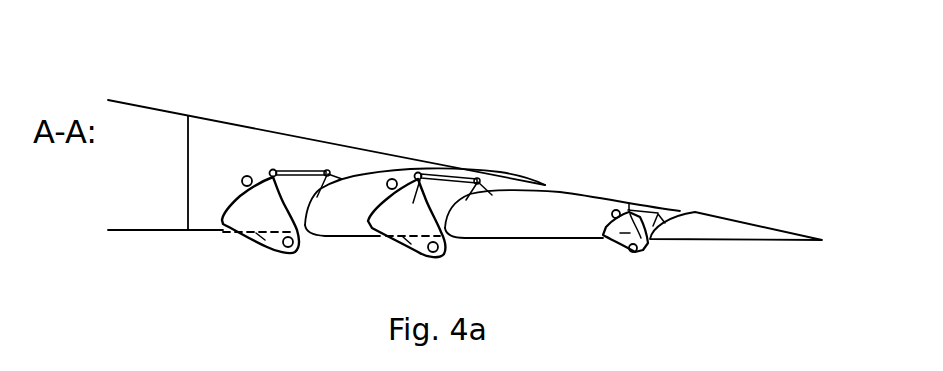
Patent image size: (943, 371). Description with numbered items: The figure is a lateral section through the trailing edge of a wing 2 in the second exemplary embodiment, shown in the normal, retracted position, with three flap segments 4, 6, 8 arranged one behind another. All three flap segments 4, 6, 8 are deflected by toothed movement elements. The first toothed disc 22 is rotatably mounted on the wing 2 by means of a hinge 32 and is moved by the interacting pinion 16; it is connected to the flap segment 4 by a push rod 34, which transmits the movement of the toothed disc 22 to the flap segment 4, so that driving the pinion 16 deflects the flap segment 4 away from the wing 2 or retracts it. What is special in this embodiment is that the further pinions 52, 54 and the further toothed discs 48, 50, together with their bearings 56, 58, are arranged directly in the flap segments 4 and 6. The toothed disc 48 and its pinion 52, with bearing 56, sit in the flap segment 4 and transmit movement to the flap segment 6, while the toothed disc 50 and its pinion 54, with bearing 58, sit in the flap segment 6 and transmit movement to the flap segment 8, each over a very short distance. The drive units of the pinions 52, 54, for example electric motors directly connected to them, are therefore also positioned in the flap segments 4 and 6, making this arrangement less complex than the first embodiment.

The wing 2 is at (168, 178).
The flap segment 4 is at (350, 187).
The flap segment 6 is at (533, 210).
The flap segment 8 is at (693, 222).
The pinion 16 is at (247, 176).
The toothed disc 22 is at (242, 213).
The hinge 32 is at (292, 247).
The push rod 34 is at (305, 168).
The toothed disc 48 is at (420, 176).
The toothed disc 50 is at (645, 238).
The pinion 52 is at (392, 179).
The pinion 54 is at (614, 210).
The bearing 56 is at (437, 250).
The bearing 58 is at (635, 252).